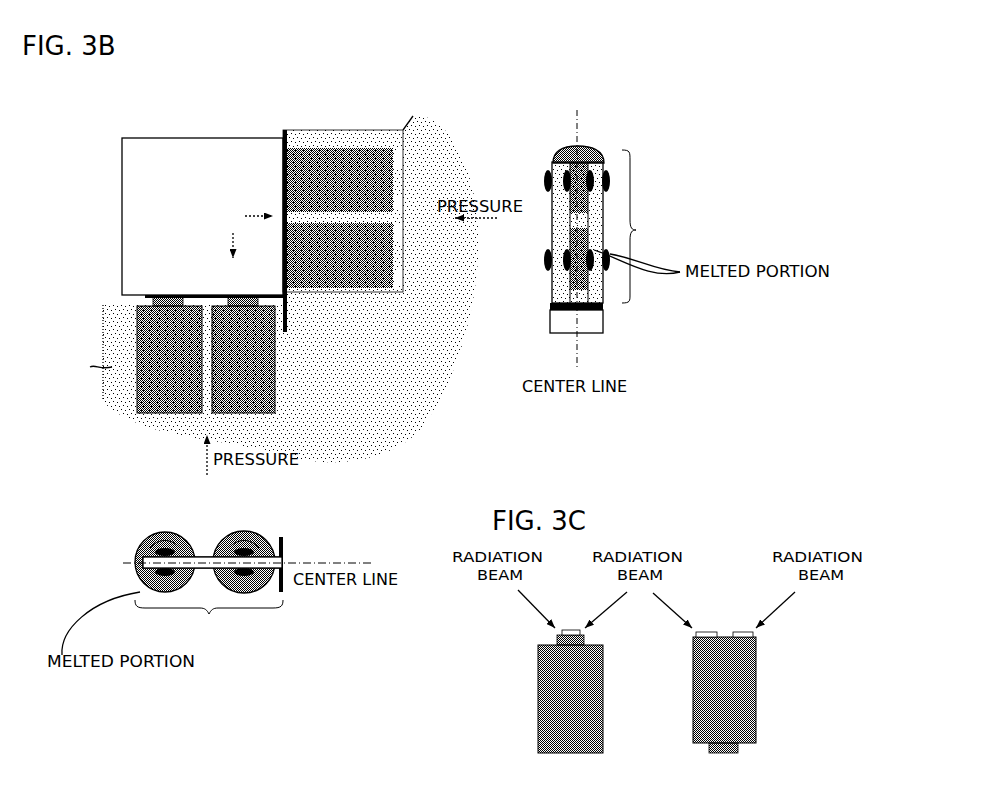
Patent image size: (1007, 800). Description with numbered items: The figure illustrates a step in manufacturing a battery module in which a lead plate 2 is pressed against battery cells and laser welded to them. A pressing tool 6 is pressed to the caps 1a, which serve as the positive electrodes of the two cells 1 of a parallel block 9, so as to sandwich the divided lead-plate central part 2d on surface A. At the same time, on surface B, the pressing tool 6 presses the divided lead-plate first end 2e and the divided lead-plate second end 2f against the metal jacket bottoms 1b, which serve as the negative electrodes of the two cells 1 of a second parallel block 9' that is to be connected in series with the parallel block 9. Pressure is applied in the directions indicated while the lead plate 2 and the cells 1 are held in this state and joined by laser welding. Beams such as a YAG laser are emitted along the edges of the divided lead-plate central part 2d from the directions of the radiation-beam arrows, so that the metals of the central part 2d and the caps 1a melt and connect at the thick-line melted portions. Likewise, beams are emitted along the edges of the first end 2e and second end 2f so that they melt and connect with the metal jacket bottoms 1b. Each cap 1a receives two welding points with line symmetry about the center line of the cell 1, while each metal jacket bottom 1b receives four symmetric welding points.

In FIG. 3B, the cell 1 is at (168, 398).
In FIG. 3C, the cell 1 is at (552, 710).
In FIG. 3B, the cap 1a is at (153, 302).
In FIG. 3C, the cap 1a is at (572, 640).
In FIG. 3B, the metal jacket bottom 1b is at (287, 178).
In FIG. 3C, the metal jacket bottom 1b is at (725, 639).
In FIG. 3B, the lead plate 2 is at (287, 320).
In FIG. 3B, the divided lead-plate central part 2d is at (262, 542).
In FIG. 3C, the divided lead-plate central part 2d is at (573, 631).
In FIG. 3B, the divided lead-plate first end 2e is at (592, 305).
In FIG. 3C, the divided lead-plate first end 2e is at (707, 632).
In FIG. 3B, the divided lead-plate second end 2f is at (560, 305).
In FIG. 3C, the divided lead-plate second end 2f is at (748, 632).
In FIG. 3B, the pressing tool 6 is at (158, 138).
In FIG. 3B, the parallel block 9 is at (209, 622).
In FIG. 3B, the parallel block 9' is at (640, 226).